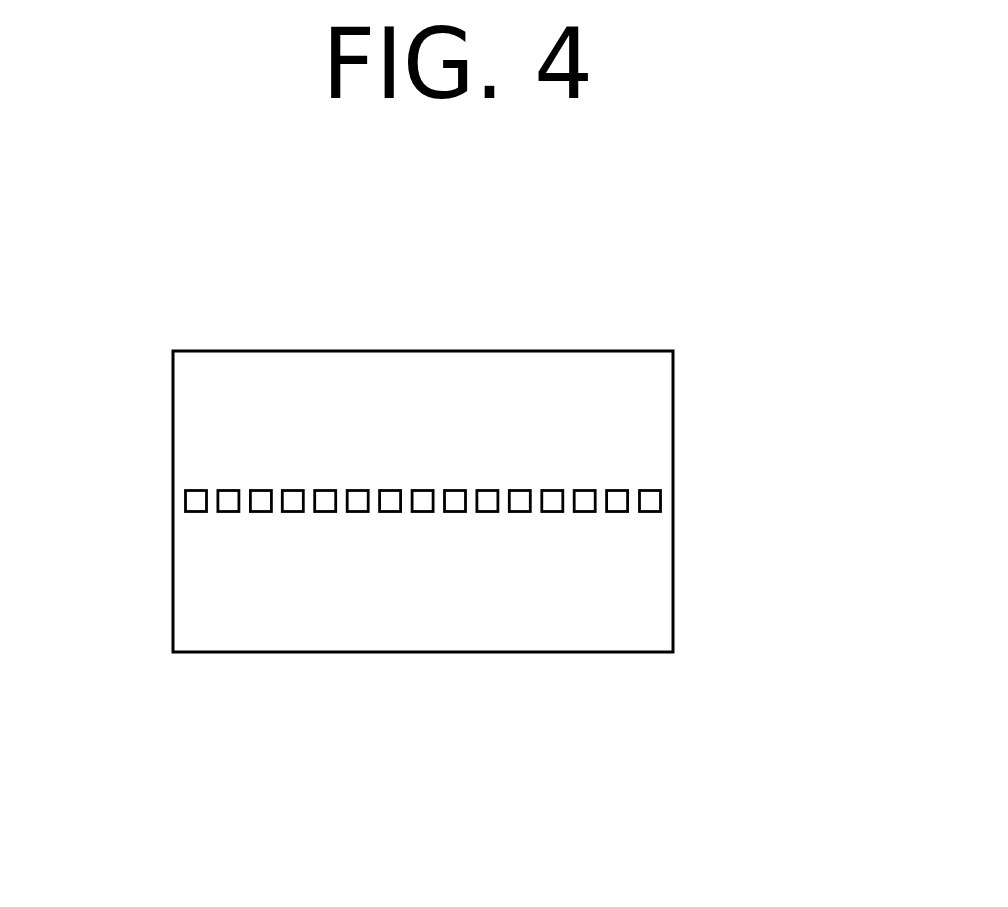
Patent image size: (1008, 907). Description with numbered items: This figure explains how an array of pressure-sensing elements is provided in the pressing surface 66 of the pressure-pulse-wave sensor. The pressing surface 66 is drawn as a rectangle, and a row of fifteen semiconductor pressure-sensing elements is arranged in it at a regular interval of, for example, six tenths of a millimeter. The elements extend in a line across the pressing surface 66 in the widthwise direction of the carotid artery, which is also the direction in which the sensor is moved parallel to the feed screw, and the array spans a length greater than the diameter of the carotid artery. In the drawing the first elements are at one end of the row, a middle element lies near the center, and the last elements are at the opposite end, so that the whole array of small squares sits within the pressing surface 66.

The pressing surface 66 is at (497, 365).